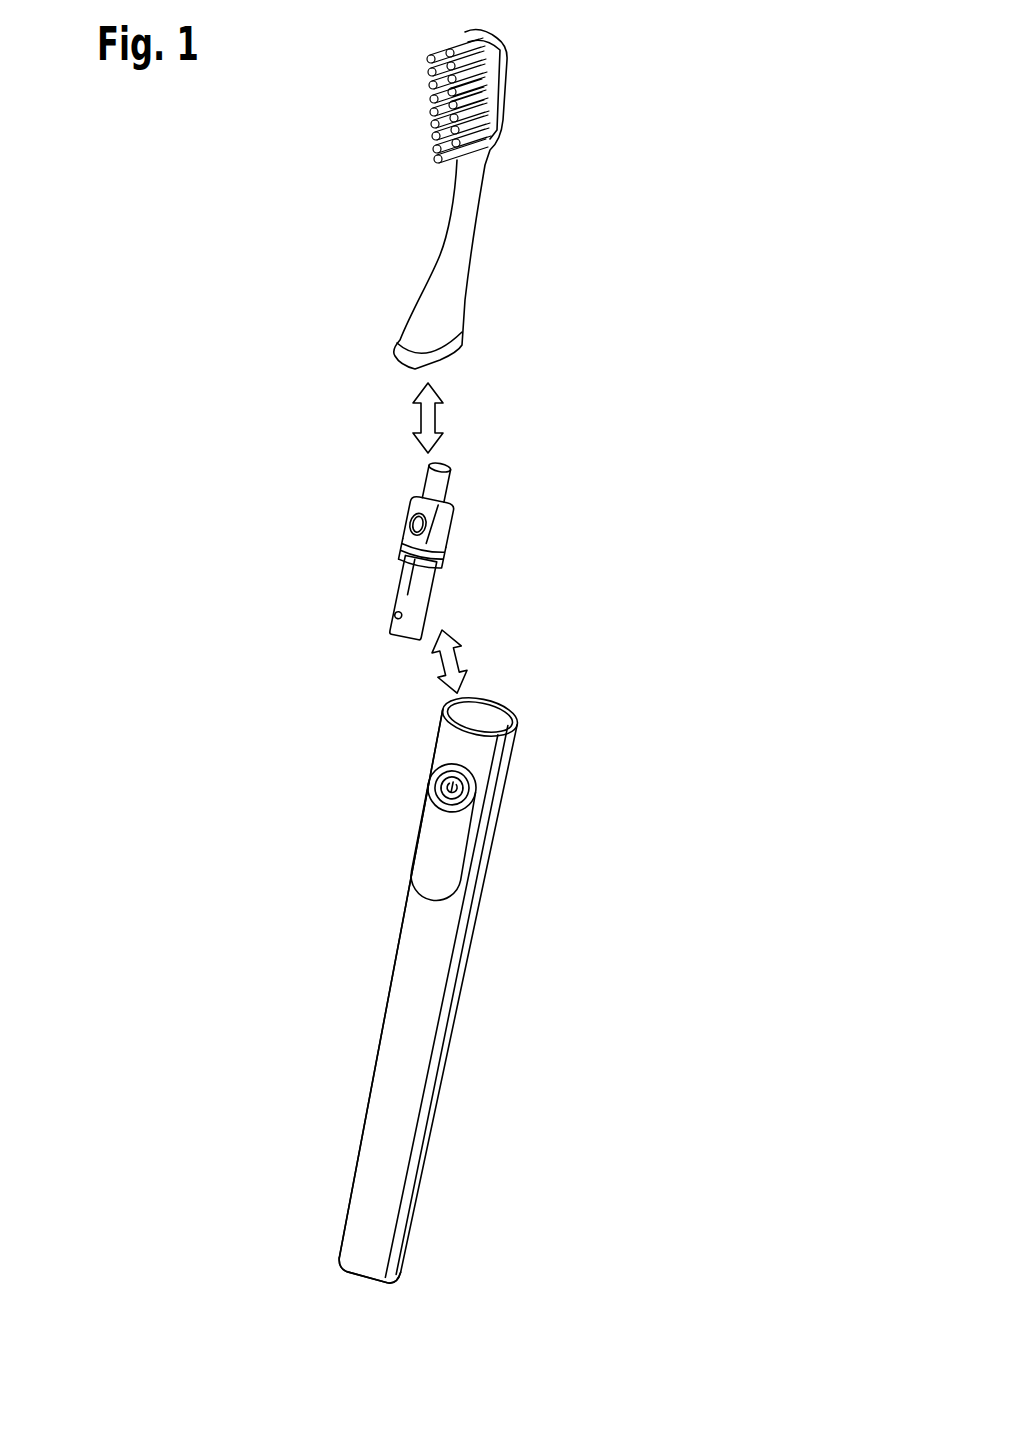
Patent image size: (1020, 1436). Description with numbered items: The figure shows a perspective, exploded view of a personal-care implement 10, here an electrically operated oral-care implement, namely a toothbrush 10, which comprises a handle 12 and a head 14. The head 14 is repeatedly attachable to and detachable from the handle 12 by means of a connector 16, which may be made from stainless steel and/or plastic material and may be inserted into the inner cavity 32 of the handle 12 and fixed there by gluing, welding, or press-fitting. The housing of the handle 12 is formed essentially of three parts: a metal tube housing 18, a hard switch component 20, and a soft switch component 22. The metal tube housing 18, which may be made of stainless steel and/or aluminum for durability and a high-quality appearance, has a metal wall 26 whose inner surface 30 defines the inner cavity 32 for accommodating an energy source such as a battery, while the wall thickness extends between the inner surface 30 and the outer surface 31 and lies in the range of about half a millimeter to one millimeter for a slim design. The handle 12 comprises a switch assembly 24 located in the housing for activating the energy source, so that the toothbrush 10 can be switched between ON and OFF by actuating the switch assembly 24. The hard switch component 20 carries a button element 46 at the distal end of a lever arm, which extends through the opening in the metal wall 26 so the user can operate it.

The toothbrush 10 is at (641, 217).
The handle 12 is at (430, 1093).
The head 14 is at (455, 262).
The connector 16 is at (442, 588).
The metal tube housing 18 is at (439, 951).
The hard switch component 20 is at (432, 779).
The soft switch component 22 is at (432, 878).
The switch assembly 24 is at (405, 842).
The metal wall 26 is at (391, 1198).
The inner surface 30 is at (490, 700).
The outer surface 31 is at (386, 1129).
The inner cavity 32 is at (456, 720).
The button element 46 is at (478, 793).